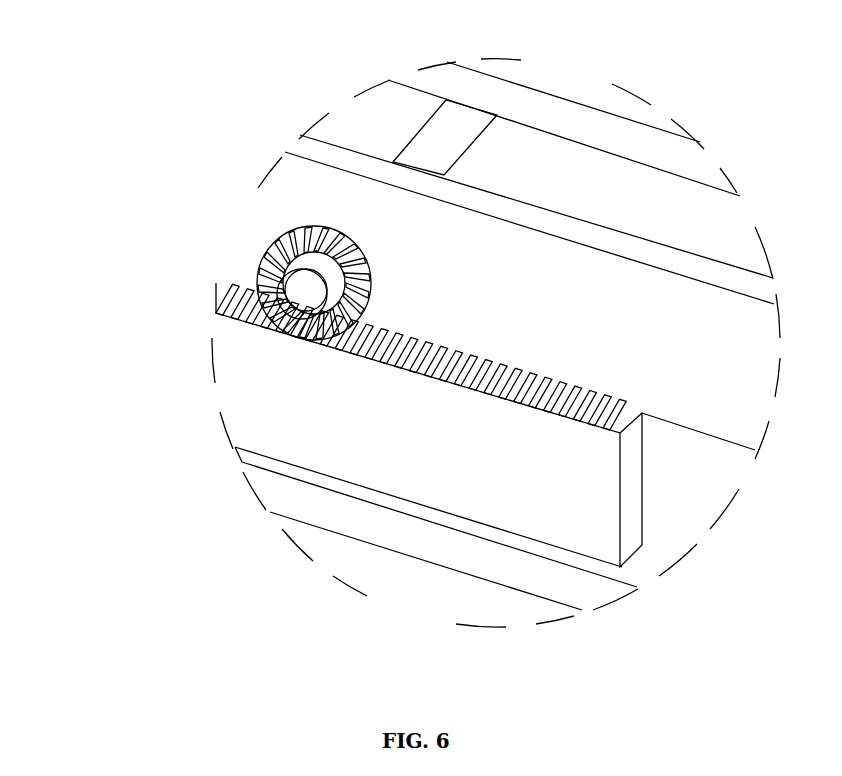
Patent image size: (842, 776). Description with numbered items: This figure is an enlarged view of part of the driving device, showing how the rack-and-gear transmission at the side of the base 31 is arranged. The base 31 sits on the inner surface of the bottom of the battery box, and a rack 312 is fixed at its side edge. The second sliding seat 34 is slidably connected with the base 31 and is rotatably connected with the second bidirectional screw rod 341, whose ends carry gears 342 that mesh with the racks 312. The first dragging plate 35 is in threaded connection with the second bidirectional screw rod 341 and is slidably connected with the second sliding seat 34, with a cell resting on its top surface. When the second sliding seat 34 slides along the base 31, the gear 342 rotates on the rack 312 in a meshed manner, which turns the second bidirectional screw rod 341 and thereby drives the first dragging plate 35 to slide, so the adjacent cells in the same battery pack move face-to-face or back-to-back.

The base 31 is at (437, 535).
The rack 312 is at (297, 437).
The second sliding seat 34 is at (320, 195).
The second bidirectional screw rod 341 is at (418, 128).
The gear 342 is at (277, 243).
The first dragging plate 35 is at (558, 86).